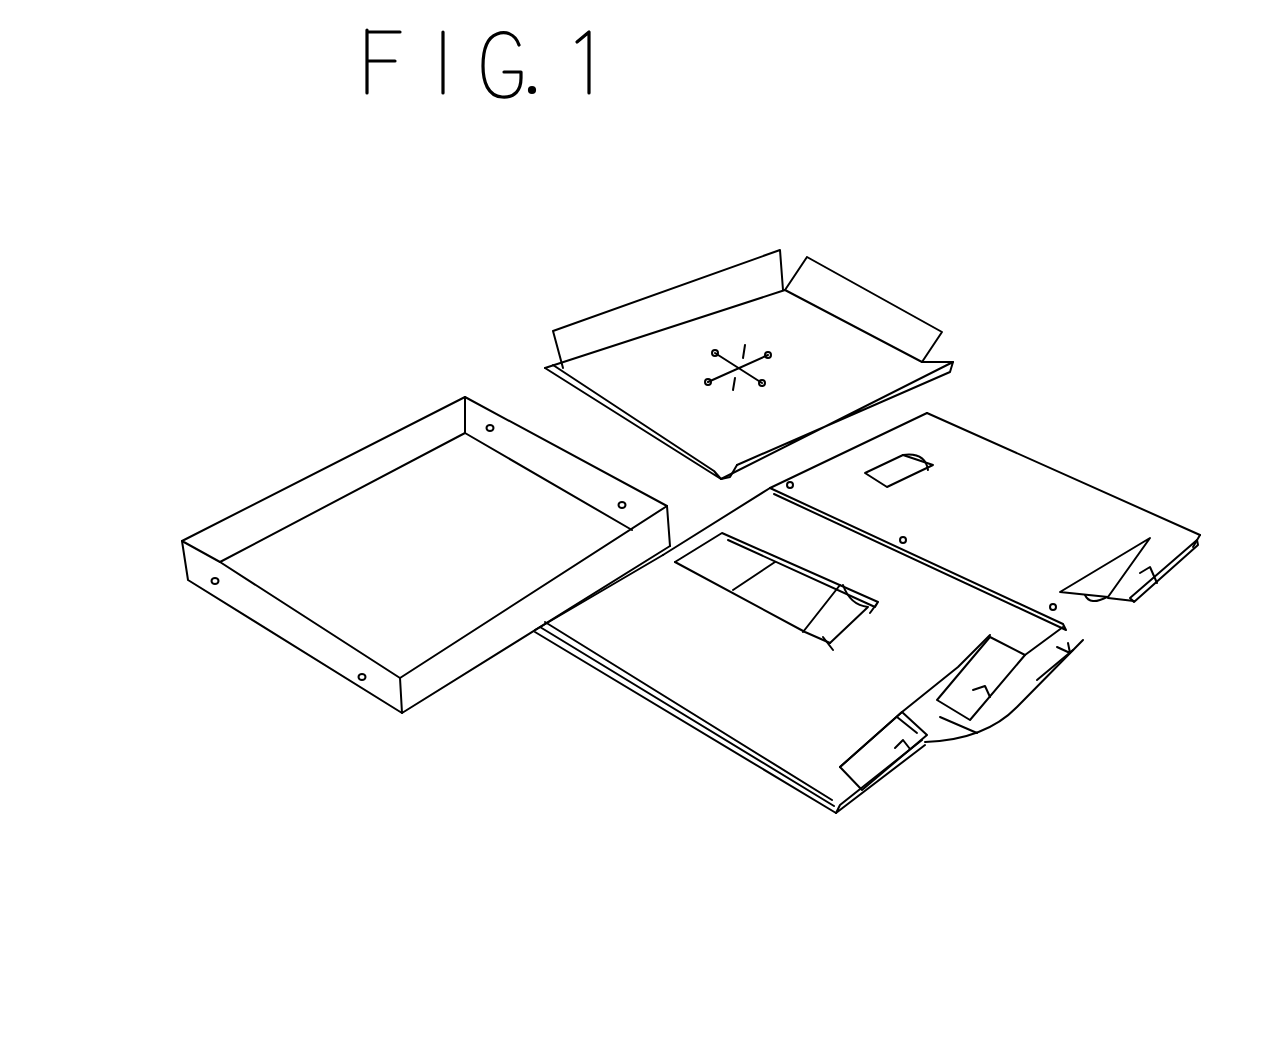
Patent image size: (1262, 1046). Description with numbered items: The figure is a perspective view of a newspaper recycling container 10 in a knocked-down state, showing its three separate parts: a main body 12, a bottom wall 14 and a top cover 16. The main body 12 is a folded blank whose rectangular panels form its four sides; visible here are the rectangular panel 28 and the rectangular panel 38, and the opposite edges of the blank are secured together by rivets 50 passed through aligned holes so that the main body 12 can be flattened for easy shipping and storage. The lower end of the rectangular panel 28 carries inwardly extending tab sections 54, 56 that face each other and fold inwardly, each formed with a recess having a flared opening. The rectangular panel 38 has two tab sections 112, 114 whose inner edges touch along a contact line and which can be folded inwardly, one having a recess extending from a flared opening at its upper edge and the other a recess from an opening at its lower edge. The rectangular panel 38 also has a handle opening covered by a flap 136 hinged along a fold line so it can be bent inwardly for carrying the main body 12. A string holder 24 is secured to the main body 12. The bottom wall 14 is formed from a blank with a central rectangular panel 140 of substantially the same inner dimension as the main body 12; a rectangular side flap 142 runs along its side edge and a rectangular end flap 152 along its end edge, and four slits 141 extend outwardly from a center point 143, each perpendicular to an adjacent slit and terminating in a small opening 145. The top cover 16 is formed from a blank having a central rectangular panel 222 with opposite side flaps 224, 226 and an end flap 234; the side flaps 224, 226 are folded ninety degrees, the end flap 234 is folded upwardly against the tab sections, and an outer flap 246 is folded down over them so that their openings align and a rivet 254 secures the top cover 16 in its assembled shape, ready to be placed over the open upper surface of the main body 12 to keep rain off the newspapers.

The newspaper recycling container 10 is at (913, 190).
The main body 12 is at (1032, 450).
The bottom wall 14 is at (625, 268).
The top cover 16 is at (362, 418).
The string holder 24 is at (748, 612).
The rectangular panel 28 is at (787, 750).
The rectangular panel 38 is at (1093, 507).
The rivets 50 is at (794, 484).
The tab section 54 is at (873, 763).
The tab section 56 is at (993, 663).
The tab section 112 is at (1102, 612).
The tab section 114 is at (1167, 553).
The flap 136 is at (907, 453).
The central rectangular panel 140 is at (600, 370).
The slits 141 is at (761, 327).
The rectangular side flap 142 is at (748, 277).
The center point 143 is at (737, 405).
The small openings 145 is at (780, 352).
The rectangular end flap 152 is at (865, 310).
The central rectangular panel 222 is at (447, 577).
The side flap 224 is at (311, 479).
The side flap 226 is at (463, 665).
The end flap 234 is at (283, 630).
The outer flap 246 is at (533, 458).
The rivet 254 is at (490, 424).